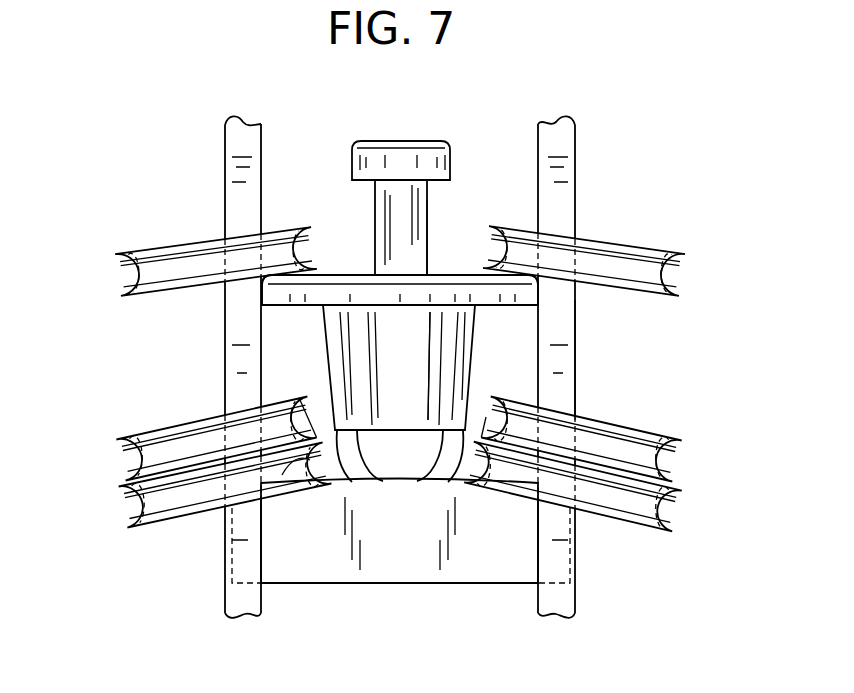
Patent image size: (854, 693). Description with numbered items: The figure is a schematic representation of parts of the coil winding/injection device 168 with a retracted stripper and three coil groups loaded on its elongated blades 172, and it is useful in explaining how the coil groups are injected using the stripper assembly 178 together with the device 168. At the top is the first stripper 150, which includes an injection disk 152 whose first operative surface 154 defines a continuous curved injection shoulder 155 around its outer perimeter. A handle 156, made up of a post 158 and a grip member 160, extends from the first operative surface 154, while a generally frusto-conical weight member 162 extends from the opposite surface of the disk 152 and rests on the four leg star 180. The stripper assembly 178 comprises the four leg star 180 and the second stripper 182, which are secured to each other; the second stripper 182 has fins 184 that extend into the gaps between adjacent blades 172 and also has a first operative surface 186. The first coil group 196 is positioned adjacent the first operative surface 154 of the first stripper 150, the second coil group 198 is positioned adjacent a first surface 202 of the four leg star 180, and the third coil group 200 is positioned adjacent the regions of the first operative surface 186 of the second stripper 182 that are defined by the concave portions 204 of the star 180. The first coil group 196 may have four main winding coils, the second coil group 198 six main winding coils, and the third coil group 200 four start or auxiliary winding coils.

The stripper 150 is at (540, 311).
The injection disk 152 is at (265, 300).
The first operative surface 154 is at (442, 275).
The continuous curved injection shoulder 155 is at (266, 276).
The handle 156 is at (419, 135).
The post 158 is at (374, 203).
The grip member 160 is at (383, 148).
The weight member 162 is at (435, 344).
The coil winding/injection device 168 is at (580, 363).
The blades 172 is at (237, 148).
The stripper assembly 178 is at (325, 357).
The four leg star 180 is at (498, 437).
The second stripper 182 is at (480, 555).
The fins 184 is at (233, 562).
The first operative surface 186 is at (282, 475).
The first coil group 196 is at (180, 243).
The second coil group 198 is at (150, 440).
The third coil group 200 is at (162, 523).
The first surface 202 is at (300, 405).
The concave portions 204 is at (365, 467).